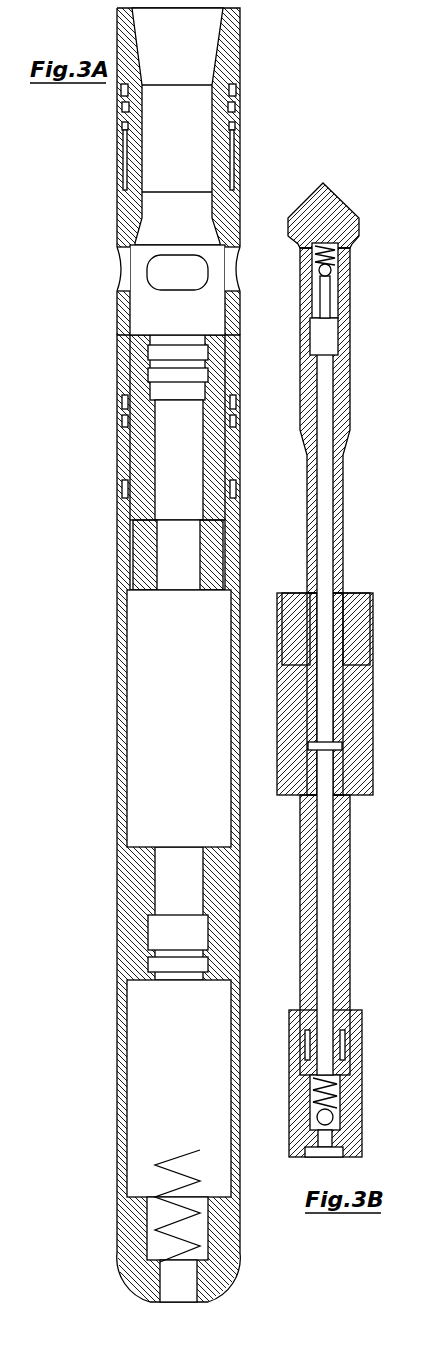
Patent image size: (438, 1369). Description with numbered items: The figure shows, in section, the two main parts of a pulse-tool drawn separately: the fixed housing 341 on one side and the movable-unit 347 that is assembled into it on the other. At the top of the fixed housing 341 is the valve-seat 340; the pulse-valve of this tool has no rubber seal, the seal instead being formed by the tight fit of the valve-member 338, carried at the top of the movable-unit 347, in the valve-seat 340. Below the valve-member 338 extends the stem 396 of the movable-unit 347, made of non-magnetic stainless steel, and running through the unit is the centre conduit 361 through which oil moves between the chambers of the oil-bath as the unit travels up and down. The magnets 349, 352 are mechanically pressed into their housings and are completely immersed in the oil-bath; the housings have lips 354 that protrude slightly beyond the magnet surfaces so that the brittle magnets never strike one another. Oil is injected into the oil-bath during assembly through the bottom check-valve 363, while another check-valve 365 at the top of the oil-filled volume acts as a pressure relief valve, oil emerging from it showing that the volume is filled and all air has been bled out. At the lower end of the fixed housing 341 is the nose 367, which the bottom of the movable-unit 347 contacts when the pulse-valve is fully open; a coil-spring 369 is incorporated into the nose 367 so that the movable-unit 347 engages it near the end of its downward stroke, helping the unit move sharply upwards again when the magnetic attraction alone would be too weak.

In FIG. 3A, the valve-seat 340 is at (128, 222).
In FIG. 3A, the fixed housing 341 is at (137, 870).
In FIG. 3A, the lips 354 is at (135, 592).
In FIG. 3B, the lips 354 is at (372, 593).
In FIG. 3A, the magnet 352 is at (152, 600).
In FIG. 3A, the nose 367 is at (122, 1242).
In FIG. 3A, the coil-spring 369 is at (165, 1177).
In FIG. 3B, the movable-unit 347 is at (356, 633).
In FIG. 3B, the valve-member 338 is at (356, 226).
In FIG. 3B, the check-valve 365 is at (340, 278).
In FIG. 3B, the stem 396 is at (350, 385).
In FIG. 3B, the magnet 349 is at (357, 625).
In FIG. 3B, the centre conduit 361 is at (330, 958).
In FIG. 3B, the check-valve 363 is at (332, 1130).